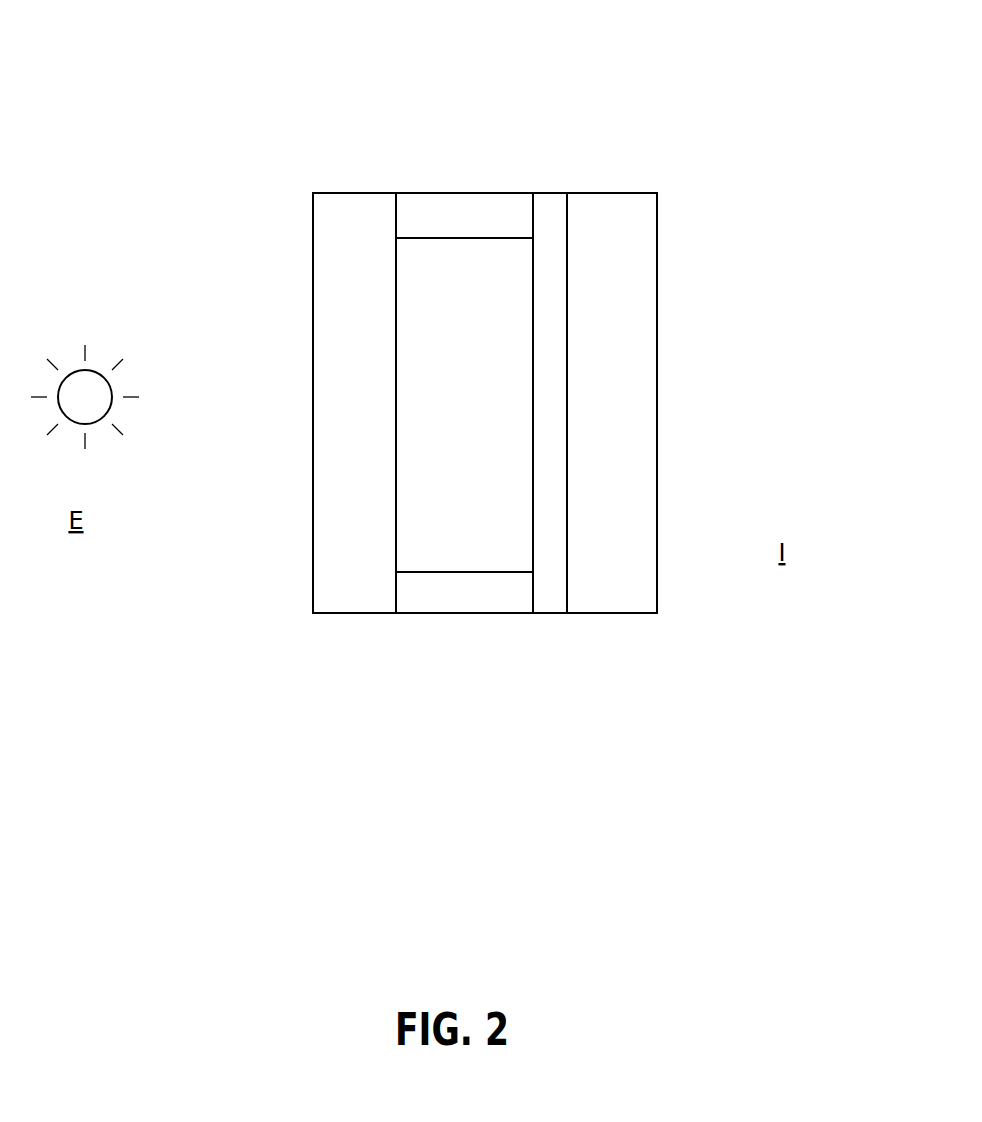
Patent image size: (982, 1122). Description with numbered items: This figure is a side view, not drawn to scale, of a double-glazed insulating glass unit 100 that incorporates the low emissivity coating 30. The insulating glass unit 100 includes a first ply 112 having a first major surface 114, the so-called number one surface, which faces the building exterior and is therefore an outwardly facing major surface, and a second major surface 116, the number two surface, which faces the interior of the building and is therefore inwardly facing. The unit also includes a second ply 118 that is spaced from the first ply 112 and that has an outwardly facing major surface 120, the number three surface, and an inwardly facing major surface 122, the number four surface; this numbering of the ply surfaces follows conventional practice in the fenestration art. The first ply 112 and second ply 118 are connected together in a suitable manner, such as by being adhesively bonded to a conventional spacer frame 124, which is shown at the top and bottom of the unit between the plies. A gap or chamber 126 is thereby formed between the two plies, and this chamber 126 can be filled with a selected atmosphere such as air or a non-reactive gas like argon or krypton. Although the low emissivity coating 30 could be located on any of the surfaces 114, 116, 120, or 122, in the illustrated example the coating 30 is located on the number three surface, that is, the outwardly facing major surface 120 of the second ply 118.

The insulating glass unit 100 is at (727, 143).
The first ply 112 is at (356, 205).
The first major surface 114 is at (306, 244).
The second major surface 116 is at (402, 279).
The second ply 118 is at (633, 205).
The outwardly facing major surface 120 is at (558, 524).
The inwardly facing major surface 122 is at (664, 489).
The spacer frame 124 is at (516, 212).
The chamber 126 is at (464, 405).
The low emissivity coating 30 is at (553, 313).